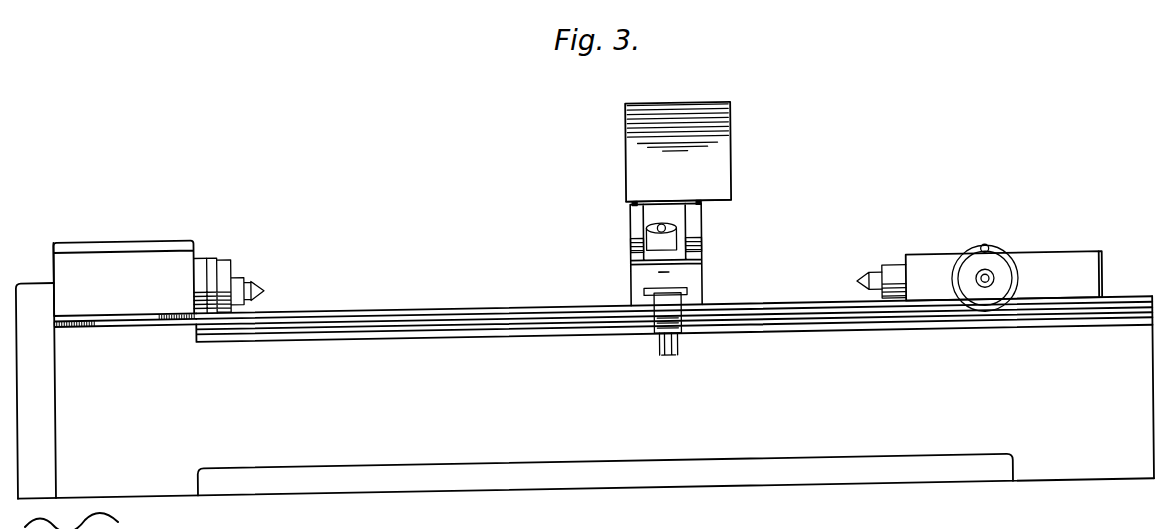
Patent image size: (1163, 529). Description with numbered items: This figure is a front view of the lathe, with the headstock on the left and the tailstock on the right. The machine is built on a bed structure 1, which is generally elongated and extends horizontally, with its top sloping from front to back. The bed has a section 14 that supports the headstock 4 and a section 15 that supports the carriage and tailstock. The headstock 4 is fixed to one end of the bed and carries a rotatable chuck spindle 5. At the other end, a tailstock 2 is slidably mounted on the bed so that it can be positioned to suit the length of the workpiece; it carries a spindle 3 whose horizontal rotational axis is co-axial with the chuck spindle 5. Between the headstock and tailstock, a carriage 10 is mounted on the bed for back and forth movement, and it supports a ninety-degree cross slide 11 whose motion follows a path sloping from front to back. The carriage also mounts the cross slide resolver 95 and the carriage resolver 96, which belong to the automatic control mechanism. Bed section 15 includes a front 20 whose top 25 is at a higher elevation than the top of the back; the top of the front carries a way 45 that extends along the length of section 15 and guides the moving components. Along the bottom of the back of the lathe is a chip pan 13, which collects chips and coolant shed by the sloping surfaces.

The bed structure 1 is at (454, 471).
The tailstock 2 is at (935, 270).
The spindle 3 is at (866, 294).
The headstock 4 is at (148, 246).
The chuck spindle 5 is at (258, 290).
The carriage 10 is at (703, 266).
The cross slide 11 is at (704, 237).
The chip pan 13 is at (607, 493).
The section 14 is at (130, 358).
The section 15 is at (580, 373).
The front 20 is at (700, 460).
The top 25 is at (450, 322).
The way 45 is at (380, 318).
The cross slide resolver 95 is at (648, 249).
The carriage resolver 96 is at (668, 357).